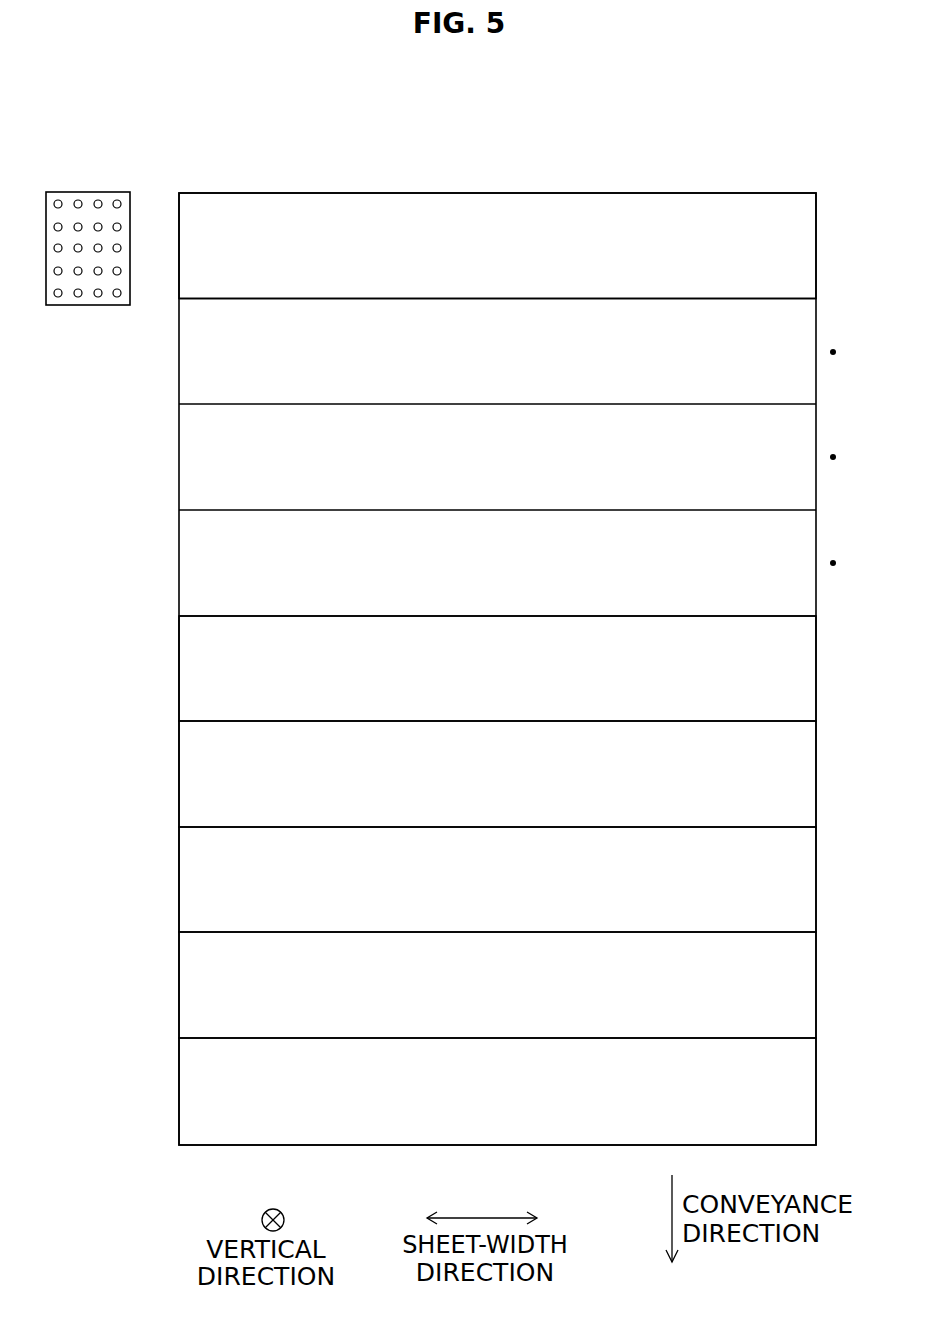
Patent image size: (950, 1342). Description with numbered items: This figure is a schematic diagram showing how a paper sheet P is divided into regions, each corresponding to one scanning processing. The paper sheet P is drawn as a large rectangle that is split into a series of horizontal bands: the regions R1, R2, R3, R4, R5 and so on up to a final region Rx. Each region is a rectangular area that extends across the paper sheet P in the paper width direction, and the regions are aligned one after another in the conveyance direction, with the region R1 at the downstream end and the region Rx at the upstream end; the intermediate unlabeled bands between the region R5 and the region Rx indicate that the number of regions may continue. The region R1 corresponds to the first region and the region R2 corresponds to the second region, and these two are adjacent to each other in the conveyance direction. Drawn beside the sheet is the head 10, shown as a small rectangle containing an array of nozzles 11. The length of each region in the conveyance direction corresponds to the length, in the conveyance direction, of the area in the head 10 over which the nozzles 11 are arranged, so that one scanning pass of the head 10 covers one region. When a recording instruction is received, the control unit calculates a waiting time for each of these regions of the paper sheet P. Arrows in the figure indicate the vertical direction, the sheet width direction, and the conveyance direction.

The head 10 is at (86, 192).
The nozzles 11 is at (120, 200).
The paper sheet P is at (503, 192).
The region Rx is at (829, 195).
The region R1 is at (829, 1040).
The region R2 is at (829, 934).
The region R3 is at (829, 829).
The region R4 is at (829, 723).
The region R5 is at (829, 618).